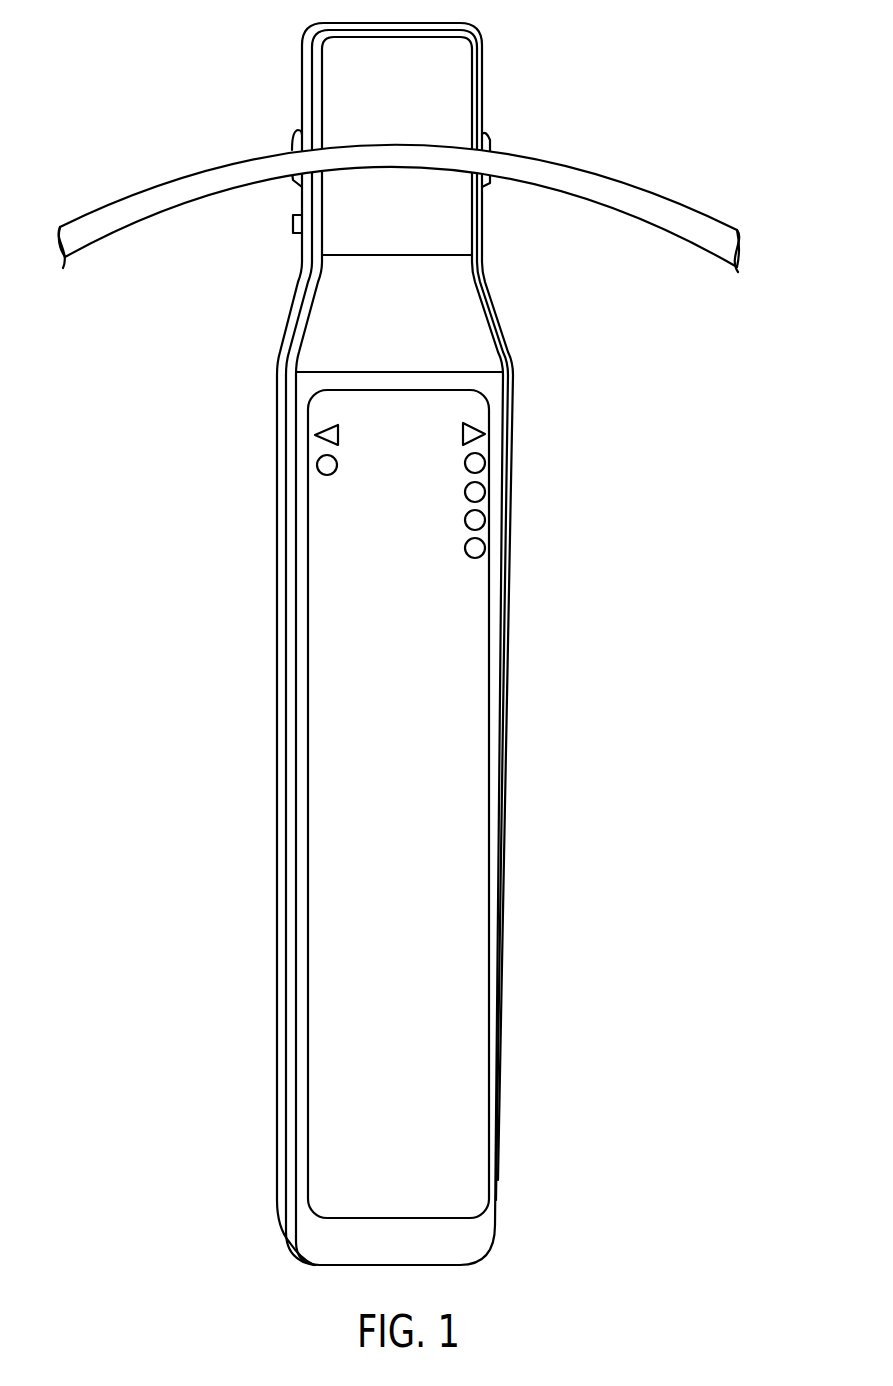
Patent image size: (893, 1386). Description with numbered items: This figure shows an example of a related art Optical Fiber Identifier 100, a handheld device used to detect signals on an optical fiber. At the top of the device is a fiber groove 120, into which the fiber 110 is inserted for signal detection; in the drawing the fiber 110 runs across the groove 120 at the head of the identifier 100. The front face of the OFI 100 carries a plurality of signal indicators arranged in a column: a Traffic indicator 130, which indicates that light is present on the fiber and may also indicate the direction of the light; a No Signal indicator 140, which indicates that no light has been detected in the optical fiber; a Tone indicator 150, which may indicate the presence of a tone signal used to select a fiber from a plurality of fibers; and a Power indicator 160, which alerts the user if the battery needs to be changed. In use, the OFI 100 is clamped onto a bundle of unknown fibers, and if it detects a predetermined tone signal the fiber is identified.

The Optical Fiber Identifier 100 is at (498, 1127).
The fiber 110 is at (678, 206).
The fiber groove 120 is at (483, 137).
The Traffic indicator 130 is at (444, 465).
The No Signal indicator 140 is at (463, 491).
The Tone indicator 150 is at (374, 522).
The Power indicator 160 is at (425, 567).